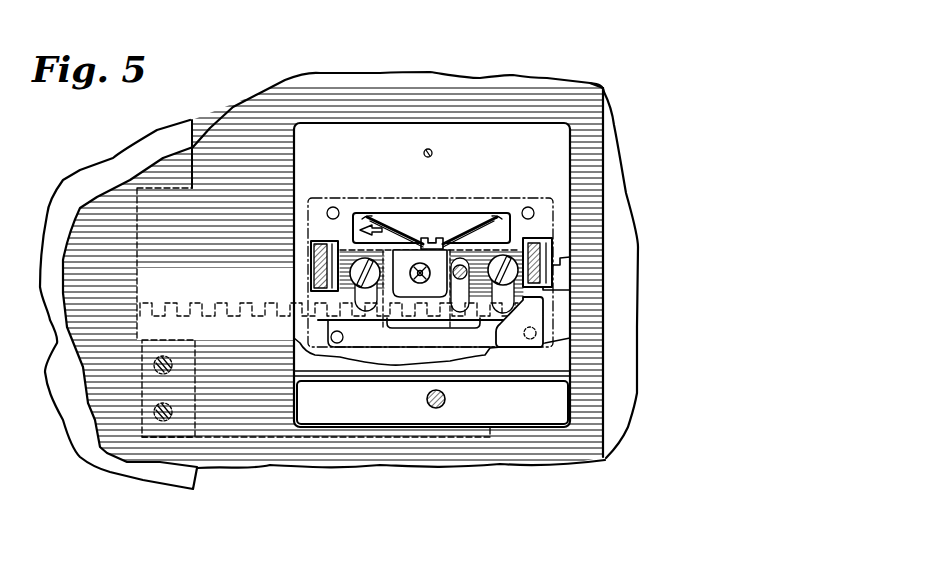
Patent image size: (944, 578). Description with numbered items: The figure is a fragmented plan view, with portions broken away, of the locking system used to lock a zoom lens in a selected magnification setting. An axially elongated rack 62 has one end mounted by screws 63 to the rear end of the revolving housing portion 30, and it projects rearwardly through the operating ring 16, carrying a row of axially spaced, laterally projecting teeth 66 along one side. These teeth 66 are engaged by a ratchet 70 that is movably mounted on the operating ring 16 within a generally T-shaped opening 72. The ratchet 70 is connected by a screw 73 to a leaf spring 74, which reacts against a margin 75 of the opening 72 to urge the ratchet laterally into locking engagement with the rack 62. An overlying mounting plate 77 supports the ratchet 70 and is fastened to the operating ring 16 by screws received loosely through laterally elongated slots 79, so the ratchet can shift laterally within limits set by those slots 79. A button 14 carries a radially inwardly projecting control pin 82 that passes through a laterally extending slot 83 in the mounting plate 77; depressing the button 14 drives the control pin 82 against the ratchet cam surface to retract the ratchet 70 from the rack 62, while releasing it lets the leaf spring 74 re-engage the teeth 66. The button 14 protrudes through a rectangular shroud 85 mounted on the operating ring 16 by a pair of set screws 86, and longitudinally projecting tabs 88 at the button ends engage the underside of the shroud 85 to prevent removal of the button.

The button 14 is at (545, 327).
The operating ring 16 is at (612, 142).
The revolving housing portion 30 is at (100, 463).
The rack 62 is at (228, 433).
The screws 63 is at (155, 364).
The teeth 66 is at (225, 303).
The ratchet 70 is at (393, 320).
The T-shaped opening 72 is at (353, 230).
The screw 73 is at (437, 240).
The leaf spring 74 is at (388, 215).
The margin 75 is at (412, 210).
The mounting plate 77 is at (510, 258).
The slots 79 is at (353, 316).
The control pin 82 is at (458, 265).
The slot 83 is at (466, 318).
The shroud 85 is at (555, 408).
The set screws 86 is at (440, 405).
The tabs 88 is at (318, 264).